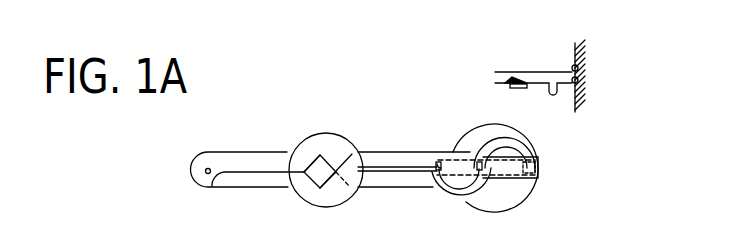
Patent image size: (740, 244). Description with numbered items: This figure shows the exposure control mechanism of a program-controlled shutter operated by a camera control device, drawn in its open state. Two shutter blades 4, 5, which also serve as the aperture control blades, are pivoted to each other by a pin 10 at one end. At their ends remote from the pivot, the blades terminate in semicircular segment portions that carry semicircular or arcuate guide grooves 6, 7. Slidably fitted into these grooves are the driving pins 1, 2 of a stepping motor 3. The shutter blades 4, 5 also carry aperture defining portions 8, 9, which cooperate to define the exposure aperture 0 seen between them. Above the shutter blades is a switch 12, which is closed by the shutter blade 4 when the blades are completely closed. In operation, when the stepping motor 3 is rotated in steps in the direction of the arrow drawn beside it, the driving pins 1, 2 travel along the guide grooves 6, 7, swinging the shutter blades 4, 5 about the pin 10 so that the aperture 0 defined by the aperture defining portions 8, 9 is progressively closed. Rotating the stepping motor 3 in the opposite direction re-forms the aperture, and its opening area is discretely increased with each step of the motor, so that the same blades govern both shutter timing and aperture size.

The exposure aperture 0 is at (312, 168).
The driving pin 1 is at (437, 180).
The driving pin 2 is at (525, 174).
The stepping motor 3 is at (463, 131).
The shutter blade 4 is at (334, 187).
The shutter blade 5 is at (338, 150).
The guide groove 6 is at (457, 190).
The guide groove 7 is at (517, 140).
The aperture defining portion 8 is at (304, 196).
The aperture defining portion 9 is at (320, 155).
The pin 10 is at (207, 175).
The switch 12 is at (537, 67).